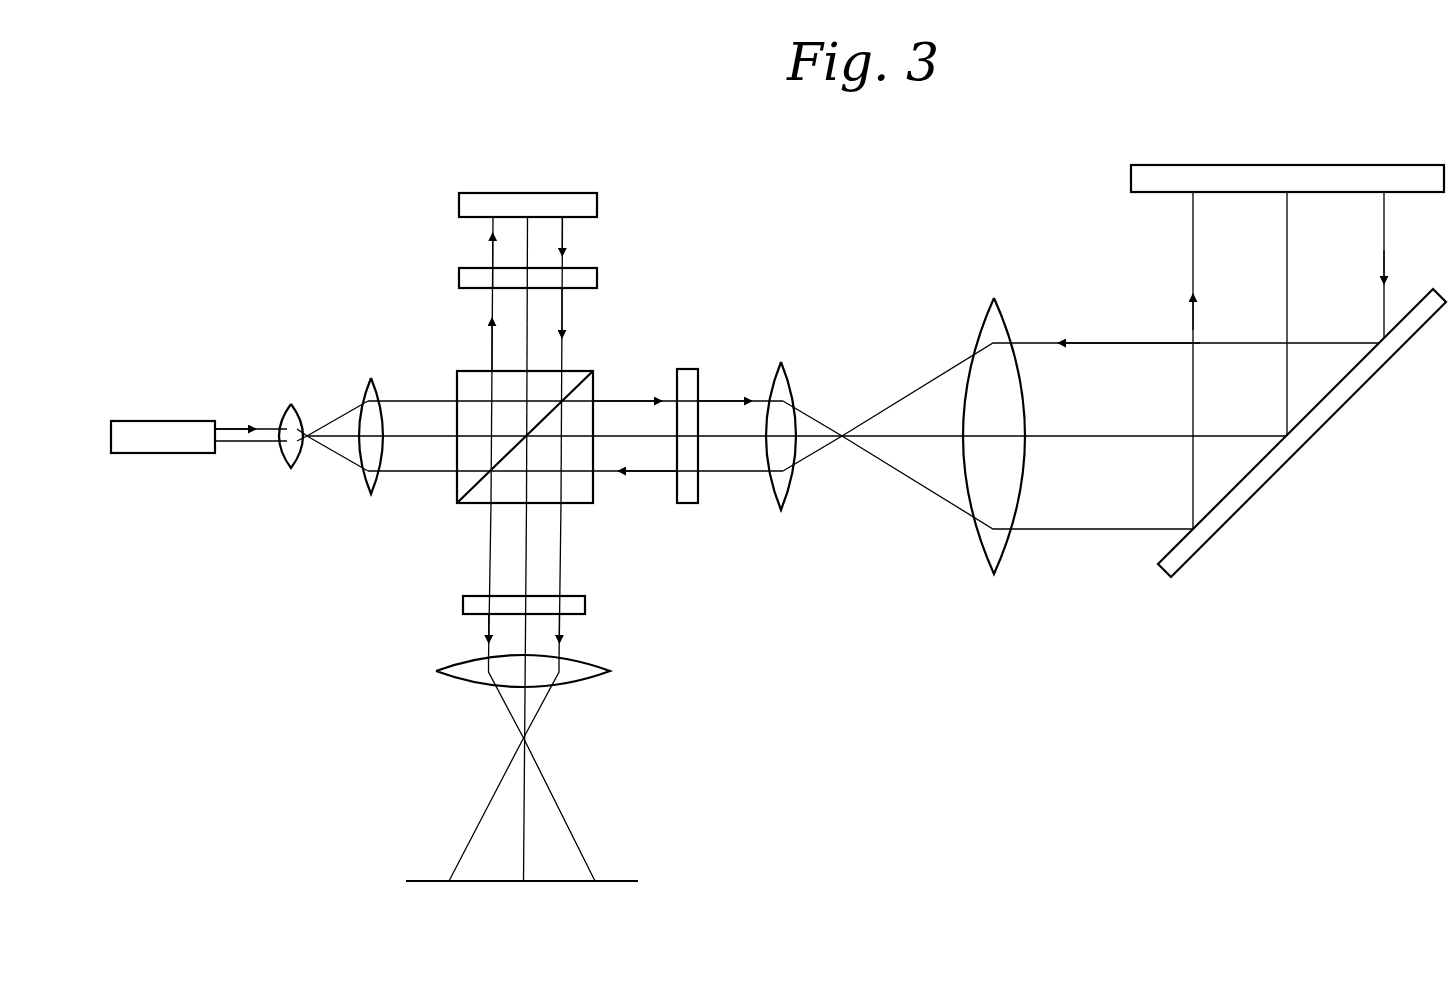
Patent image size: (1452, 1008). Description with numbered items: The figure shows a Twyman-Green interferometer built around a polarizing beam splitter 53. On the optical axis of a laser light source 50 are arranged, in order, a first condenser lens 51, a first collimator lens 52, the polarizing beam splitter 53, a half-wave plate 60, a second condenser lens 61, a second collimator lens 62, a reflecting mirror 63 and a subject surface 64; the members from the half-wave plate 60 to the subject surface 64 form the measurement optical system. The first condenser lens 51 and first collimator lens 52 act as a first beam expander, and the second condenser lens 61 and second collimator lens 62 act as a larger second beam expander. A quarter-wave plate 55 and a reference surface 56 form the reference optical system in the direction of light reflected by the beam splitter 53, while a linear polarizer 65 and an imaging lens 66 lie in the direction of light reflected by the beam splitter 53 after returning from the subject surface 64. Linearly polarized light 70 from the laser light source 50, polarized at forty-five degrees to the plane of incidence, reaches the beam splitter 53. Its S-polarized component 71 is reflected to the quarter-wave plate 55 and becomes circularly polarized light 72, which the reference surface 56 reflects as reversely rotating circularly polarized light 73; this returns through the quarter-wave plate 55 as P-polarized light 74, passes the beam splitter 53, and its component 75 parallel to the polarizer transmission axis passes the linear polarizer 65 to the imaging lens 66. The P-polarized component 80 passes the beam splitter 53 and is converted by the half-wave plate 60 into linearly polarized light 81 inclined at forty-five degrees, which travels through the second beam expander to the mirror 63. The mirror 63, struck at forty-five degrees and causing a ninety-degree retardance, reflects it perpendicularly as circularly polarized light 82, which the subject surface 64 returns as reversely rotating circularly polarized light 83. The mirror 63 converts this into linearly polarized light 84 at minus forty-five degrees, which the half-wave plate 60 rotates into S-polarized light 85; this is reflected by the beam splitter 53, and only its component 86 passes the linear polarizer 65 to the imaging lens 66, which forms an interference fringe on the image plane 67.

The laser light source 50 is at (163, 445).
The first condenser lens 51 is at (292, 468).
The first collimator lens 52 is at (371, 494).
The polarizing beam splitter 53 is at (466, 491).
The quarter-wave plate 55 is at (592, 278).
The reference surface 56 is at (592, 205).
The half-wave plate 60 is at (688, 497).
The second condenser lens 61 is at (781, 512).
The second collimator lens 62 is at (993, 573).
The reflecting mirror 63 is at (1165, 553).
The subject surface 64 is at (1152, 194).
The linear polarizer 65 is at (582, 602).
The imaging lens 66 is at (607, 668).
The image plane 67 is at (638, 882).
The linearly polarized light 70 is at (239, 419).
The S-polarized component 71 is at (488, 336).
The circularly polarized light 72 is at (488, 248).
The circularly polarized light 73 is at (566, 240).
The P-polarized light 74 is at (566, 323).
The component of P-polarized light 75 is at (565, 629).
The P-polarized component 80 is at (640, 398).
The linearly polarized light 81 is at (732, 398).
The circularly polarized light 82 is at (1190, 309).
The circularly polarized light 83 is at (1388, 268).
The linearly polarized light 84 is at (1073, 342).
The S-polarized light 85 is at (641, 483).
The component of S-polarized light 86 is at (485, 630).